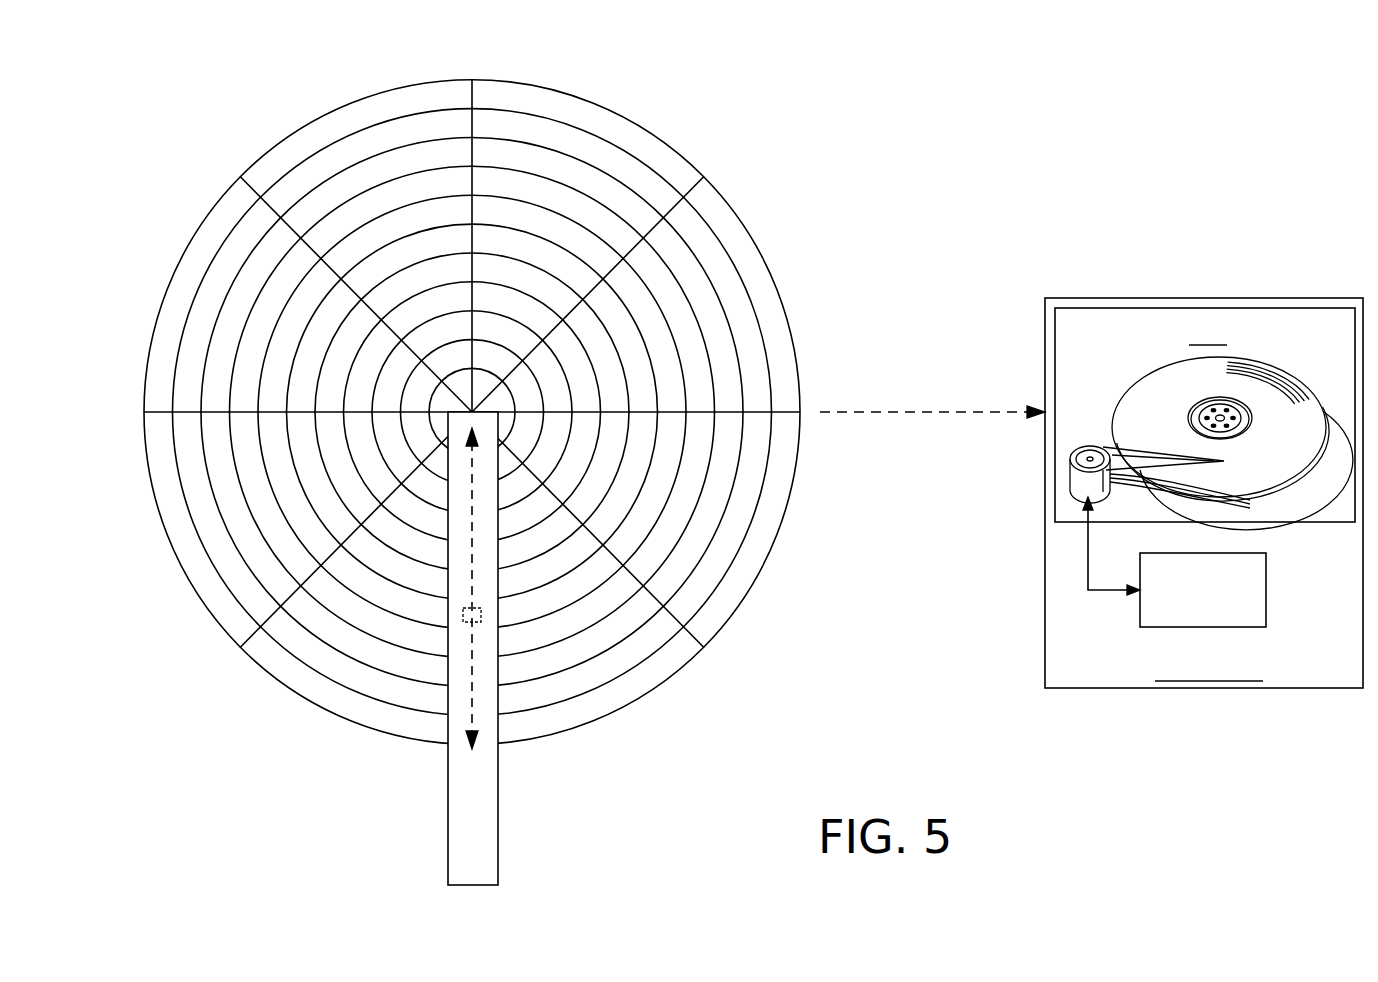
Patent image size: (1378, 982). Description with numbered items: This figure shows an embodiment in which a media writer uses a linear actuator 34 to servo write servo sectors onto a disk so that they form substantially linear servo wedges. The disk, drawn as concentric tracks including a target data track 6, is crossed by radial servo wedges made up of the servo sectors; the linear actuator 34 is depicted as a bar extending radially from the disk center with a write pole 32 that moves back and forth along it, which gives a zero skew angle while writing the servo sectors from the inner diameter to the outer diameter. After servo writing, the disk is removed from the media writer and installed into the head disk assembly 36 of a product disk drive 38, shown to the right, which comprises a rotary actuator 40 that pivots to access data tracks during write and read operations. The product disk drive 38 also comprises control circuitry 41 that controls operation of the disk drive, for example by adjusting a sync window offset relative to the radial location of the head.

The target data track 6 is at (583, 145).
The write pole 32 is at (482, 614).
The linear actuator 34 is at (498, 805).
The head disk assembly (HDA) 36 is at (1329, 524).
The product disk drive 38 is at (1045, 580).
The rotary actuator 40 is at (1088, 444).
The control circuitry 41 is at (1266, 597).